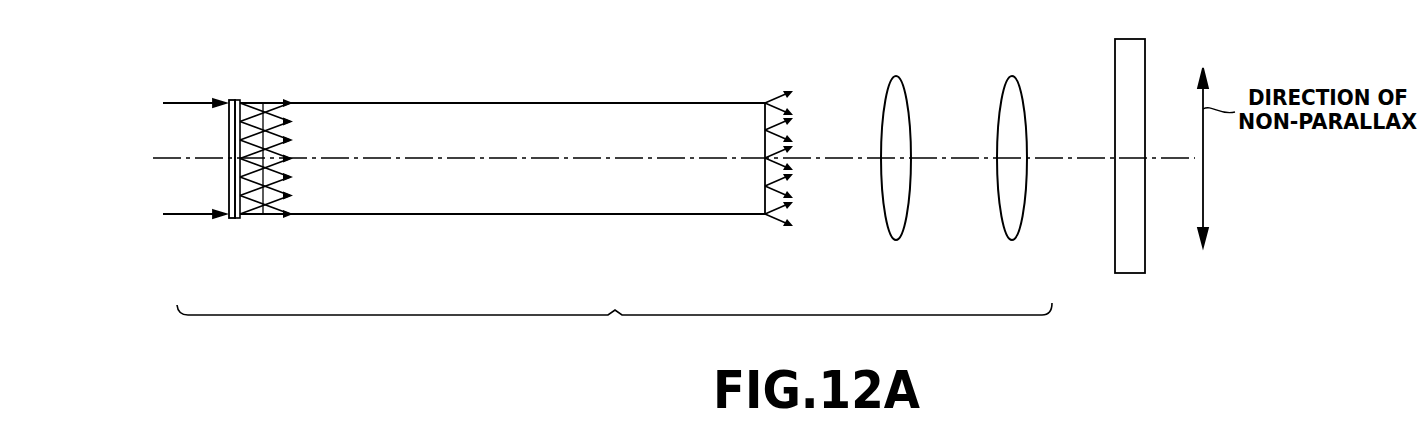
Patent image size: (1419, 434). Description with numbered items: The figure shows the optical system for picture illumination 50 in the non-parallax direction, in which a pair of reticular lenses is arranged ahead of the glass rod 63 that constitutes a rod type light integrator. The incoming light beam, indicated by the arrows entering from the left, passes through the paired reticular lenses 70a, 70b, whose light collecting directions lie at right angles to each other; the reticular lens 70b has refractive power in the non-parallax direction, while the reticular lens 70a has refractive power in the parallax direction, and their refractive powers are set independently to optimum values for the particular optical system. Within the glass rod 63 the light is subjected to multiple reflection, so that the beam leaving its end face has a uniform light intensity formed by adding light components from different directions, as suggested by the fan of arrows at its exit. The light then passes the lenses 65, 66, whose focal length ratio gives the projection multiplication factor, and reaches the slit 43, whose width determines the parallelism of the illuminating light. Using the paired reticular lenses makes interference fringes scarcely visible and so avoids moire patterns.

The reticular lens 70a is at (232, 219).
The reticular lens 70b is at (242, 219).
The glass rod 63 is at (535, 213).
The lens 65 is at (896, 236).
The lens 66 is at (1012, 236).
The slit 43 is at (1134, 268).
The optical system for picture illumination 50 is at (614, 326).